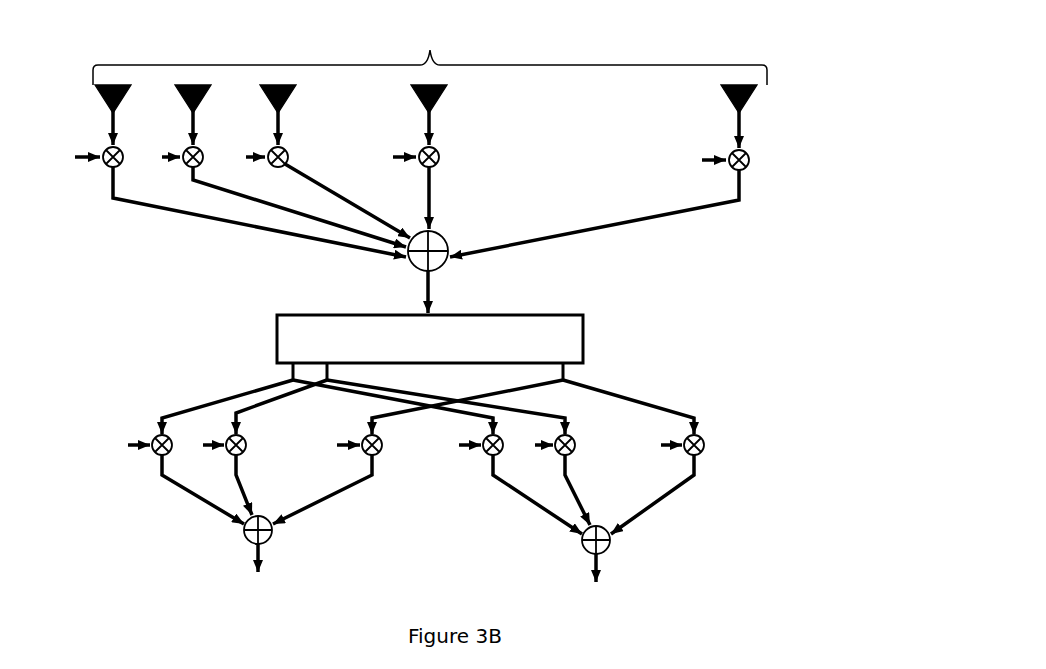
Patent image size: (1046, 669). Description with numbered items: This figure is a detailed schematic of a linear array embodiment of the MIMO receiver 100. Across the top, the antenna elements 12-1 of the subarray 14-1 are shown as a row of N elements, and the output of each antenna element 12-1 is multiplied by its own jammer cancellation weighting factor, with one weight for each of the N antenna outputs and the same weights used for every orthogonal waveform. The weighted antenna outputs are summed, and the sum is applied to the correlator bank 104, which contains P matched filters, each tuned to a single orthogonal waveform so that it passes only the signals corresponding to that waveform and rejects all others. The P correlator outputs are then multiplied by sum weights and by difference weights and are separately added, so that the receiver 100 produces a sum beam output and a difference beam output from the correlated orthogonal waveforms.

The receiver 100 is at (82, 54).
The subarray 14-1 is at (430, 67).
The antenna element 12-1 is at (722, 98).
The correlator bank 104 is at (430, 339).